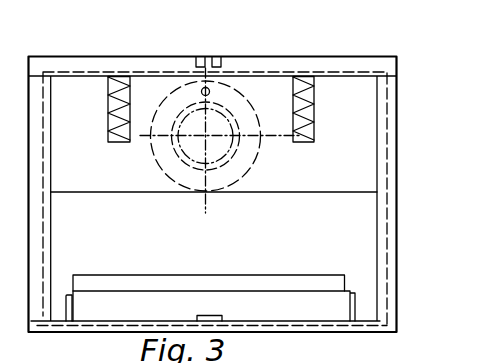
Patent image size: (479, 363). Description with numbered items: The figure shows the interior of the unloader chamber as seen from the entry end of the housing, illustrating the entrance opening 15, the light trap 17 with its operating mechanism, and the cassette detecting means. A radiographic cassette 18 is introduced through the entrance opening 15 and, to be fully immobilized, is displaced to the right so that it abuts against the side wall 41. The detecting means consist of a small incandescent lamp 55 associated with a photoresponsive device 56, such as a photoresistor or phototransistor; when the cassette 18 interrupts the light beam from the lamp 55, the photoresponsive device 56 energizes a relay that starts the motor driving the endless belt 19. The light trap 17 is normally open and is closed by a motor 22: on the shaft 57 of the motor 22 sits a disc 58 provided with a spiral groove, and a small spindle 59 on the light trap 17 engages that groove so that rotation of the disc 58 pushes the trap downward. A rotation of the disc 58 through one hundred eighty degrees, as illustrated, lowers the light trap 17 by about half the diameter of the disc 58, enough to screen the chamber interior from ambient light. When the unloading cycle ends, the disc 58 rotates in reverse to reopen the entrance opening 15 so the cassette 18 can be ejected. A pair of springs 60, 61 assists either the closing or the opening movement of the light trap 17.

The entrance opening 15 is at (362, 300).
The light trap 17 is at (338, 172).
The radiographic cassette 18 is at (312, 283).
The endless belt 19 is at (136, 303).
The motor 22 is at (222, 165).
The side wall 41 is at (391, 125).
The incandescent lamp 55 is at (212, 316).
The photoresponsive device 56 is at (204, 56).
The shaft 57 is at (223, 128).
The disc 58 is at (163, 158).
The spindle 59 is at (209, 88).
The spring 60 is at (108, 106).
The spring 61 is at (314, 108).